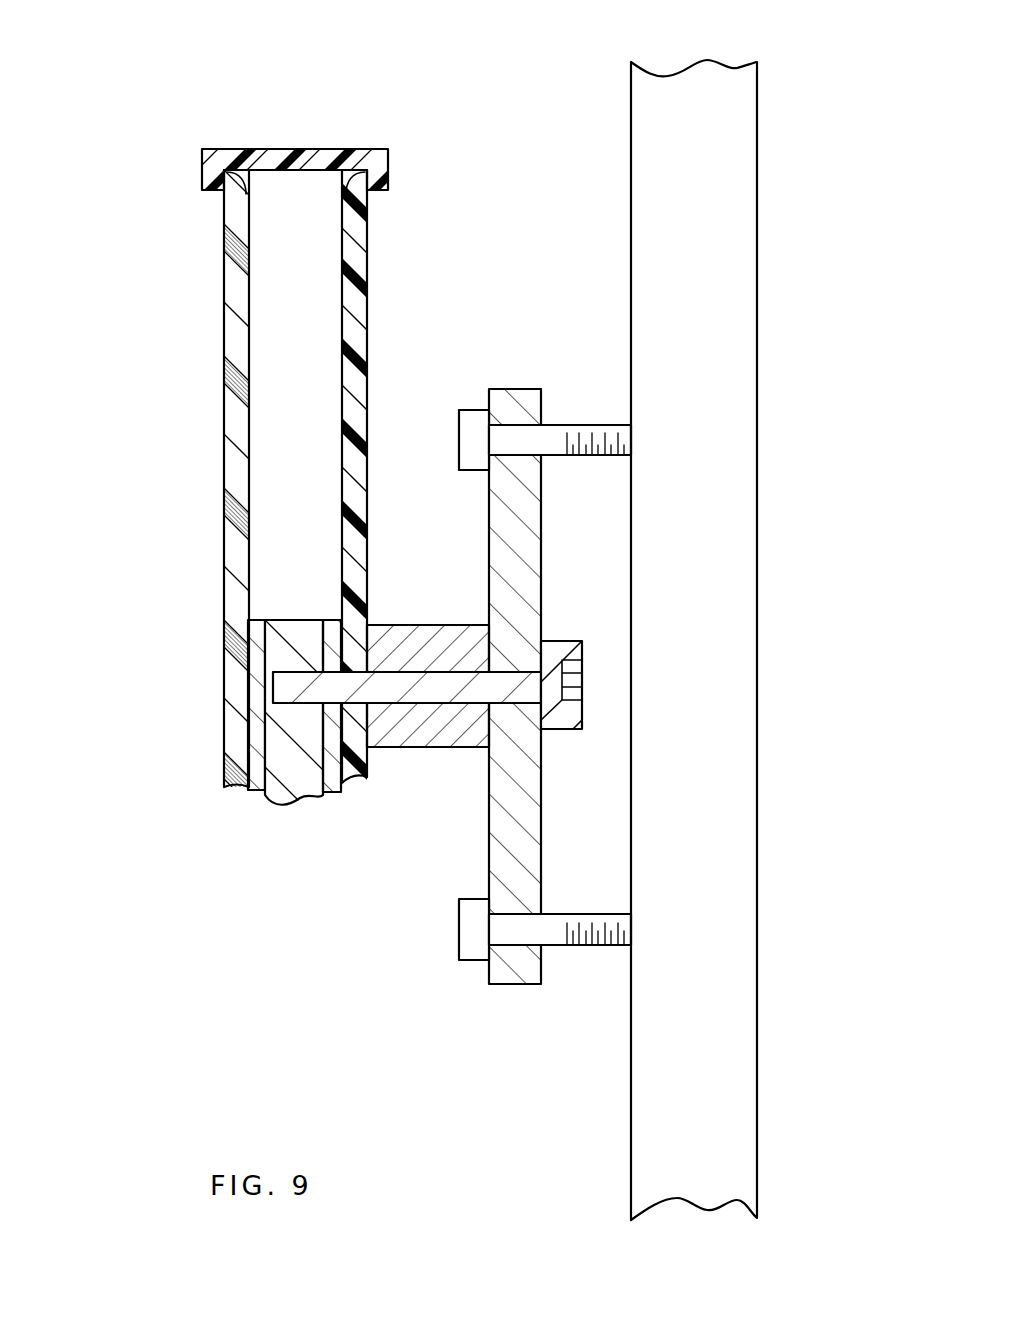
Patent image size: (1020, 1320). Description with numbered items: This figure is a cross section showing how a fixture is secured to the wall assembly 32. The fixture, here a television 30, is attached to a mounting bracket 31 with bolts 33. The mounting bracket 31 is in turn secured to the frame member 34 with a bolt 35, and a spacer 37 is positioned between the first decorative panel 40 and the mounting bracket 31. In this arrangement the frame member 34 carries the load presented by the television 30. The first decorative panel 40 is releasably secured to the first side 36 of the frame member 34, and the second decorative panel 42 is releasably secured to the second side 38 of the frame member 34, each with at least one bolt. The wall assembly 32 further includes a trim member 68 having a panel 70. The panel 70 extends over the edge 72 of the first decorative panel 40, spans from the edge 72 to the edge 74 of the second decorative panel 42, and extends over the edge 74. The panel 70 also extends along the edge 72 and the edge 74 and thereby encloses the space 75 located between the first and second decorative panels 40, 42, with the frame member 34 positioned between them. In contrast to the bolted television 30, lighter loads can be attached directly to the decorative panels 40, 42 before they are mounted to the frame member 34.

The television 30 is at (702, 77).
The mounting bracket 31 is at (516, 981).
The wall assembly 32 is at (269, 487).
The bolts 33 is at (592, 422).
The frame member 34 is at (240, 701).
The bolt 35 is at (441, 688).
The first side 36 is at (351, 625).
The spacer 37 is at (412, 643).
The second side 38 is at (248, 730).
The first decorative panel 40 is at (355, 266).
The second decorative panel 42 is at (237, 283).
The trim member 68 is at (300, 142).
The panel 70 is at (313, 157).
The edge 72 is at (356, 178).
The edge 74 is at (238, 188).
The space 75 is at (307, 350).